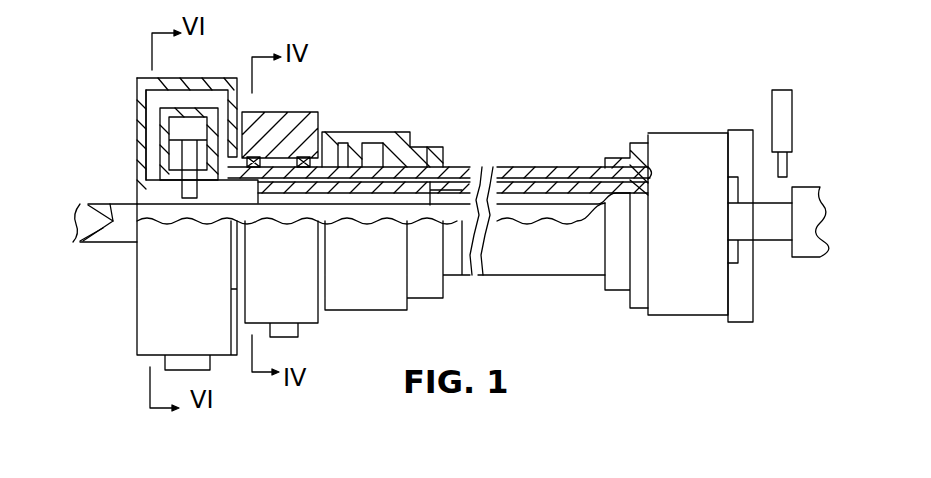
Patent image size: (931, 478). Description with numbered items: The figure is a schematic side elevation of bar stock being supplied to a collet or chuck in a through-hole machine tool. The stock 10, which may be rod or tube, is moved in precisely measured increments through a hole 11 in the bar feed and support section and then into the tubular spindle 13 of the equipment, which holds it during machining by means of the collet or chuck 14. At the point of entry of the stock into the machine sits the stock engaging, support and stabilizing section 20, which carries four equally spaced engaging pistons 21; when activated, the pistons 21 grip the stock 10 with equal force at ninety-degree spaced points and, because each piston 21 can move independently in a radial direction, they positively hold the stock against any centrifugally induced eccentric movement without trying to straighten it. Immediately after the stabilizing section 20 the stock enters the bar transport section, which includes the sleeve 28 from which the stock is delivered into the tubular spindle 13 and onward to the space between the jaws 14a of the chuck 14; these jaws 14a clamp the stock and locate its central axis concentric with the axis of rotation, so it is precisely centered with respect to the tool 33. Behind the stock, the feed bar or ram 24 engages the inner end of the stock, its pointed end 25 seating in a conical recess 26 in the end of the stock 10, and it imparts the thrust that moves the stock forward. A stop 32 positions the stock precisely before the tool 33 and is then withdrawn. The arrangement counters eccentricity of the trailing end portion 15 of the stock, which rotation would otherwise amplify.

The stock 10 is at (133, 246).
The hole 11 is at (140, 192).
The tubular spindle 13 is at (548, 167).
The chuck 14 is at (692, 142).
The jaws 14a is at (733, 322).
The trailing end portion 15 is at (118, 243).
The stabilizing section 20 is at (191, 75).
The engaging pistons 21 is at (175, 142).
The feed bar 24 is at (85, 209).
The pointed end 25 is at (73, 247).
The conical recess 26 is at (120, 217).
The sleeve 28 is at (417, 148).
The stop 32 is at (807, 193).
The tool 33 is at (785, 123).